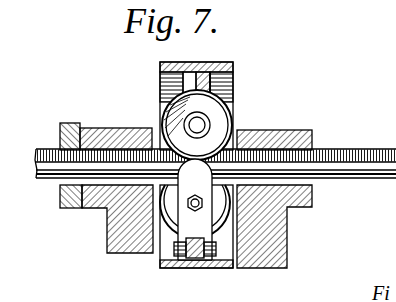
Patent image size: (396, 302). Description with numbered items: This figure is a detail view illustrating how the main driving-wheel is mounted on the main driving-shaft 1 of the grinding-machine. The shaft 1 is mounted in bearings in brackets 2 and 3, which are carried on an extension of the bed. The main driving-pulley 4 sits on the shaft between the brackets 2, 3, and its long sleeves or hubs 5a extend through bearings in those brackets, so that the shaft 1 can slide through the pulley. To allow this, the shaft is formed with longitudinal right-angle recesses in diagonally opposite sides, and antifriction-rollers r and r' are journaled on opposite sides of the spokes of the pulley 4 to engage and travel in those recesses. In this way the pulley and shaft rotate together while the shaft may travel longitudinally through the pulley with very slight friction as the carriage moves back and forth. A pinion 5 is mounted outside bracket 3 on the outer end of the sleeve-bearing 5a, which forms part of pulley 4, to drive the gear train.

The main driving-shaft 1 is at (340, 152).
The bracket 2 is at (302, 204).
The bracket 3 is at (102, 197).
The main driving-pulley 4 is at (221, 98).
The pinion 5 is at (62, 125).
The sleeve or hub 5a is at (62, 146).
The antifriction-roller r is at (208, 125).
The antifriction-roller r' is at (180, 220).